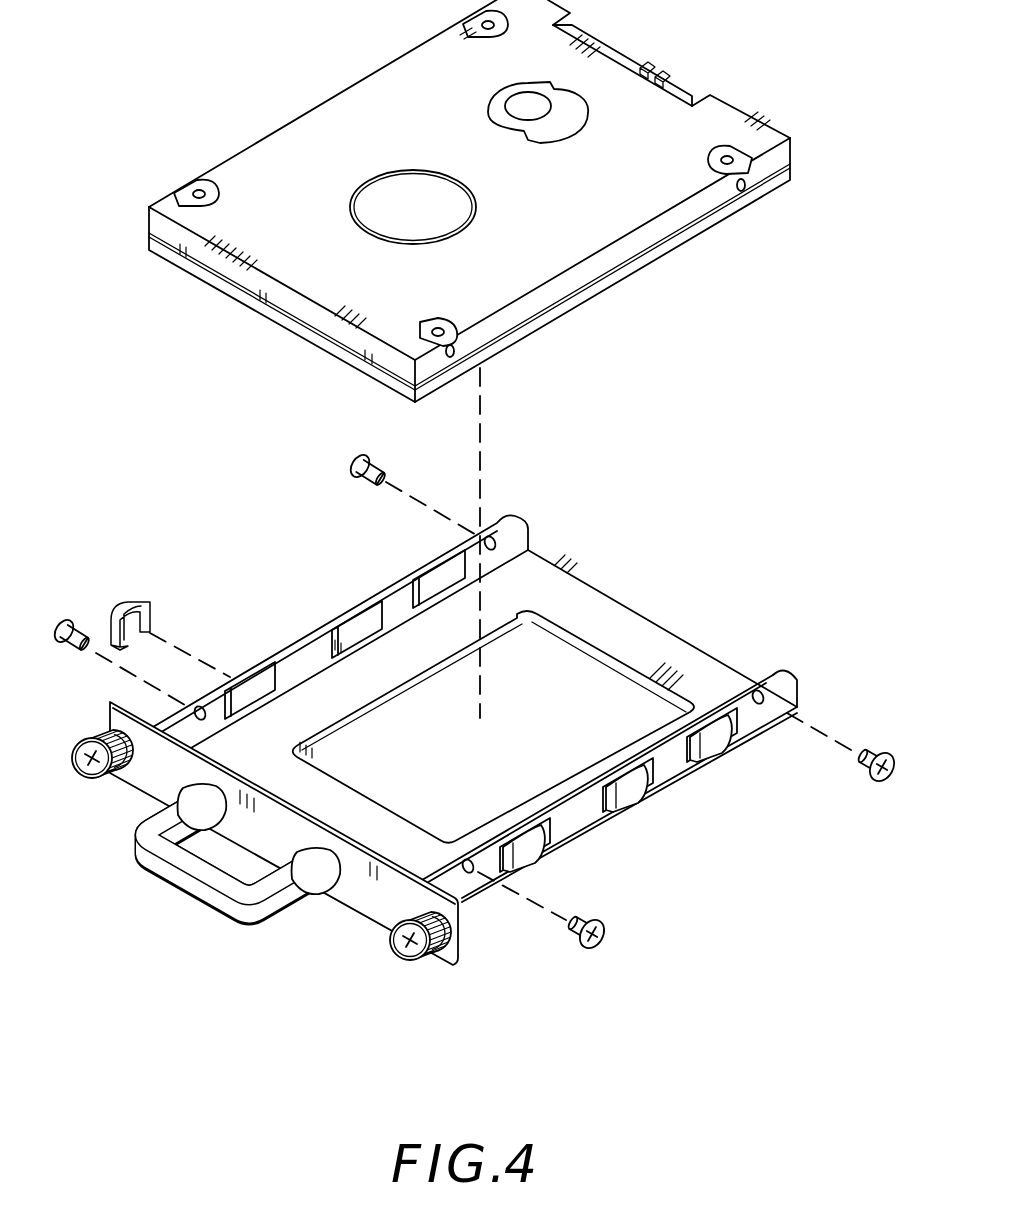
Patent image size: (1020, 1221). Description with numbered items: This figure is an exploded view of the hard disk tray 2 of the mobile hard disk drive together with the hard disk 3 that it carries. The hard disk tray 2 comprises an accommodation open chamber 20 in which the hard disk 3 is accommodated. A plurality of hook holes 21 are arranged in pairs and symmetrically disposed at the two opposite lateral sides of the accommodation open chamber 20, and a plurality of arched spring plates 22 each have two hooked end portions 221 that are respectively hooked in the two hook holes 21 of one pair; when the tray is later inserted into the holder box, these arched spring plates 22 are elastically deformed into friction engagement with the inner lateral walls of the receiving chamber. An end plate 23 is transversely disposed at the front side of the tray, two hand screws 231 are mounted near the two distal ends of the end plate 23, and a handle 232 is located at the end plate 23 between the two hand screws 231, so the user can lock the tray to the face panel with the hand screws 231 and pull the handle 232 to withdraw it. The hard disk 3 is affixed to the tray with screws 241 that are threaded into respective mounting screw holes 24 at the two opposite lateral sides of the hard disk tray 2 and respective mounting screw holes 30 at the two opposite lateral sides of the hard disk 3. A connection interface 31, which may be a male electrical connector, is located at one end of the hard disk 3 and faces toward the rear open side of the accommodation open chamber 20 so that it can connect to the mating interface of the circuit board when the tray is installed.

The hard disk tray 2 is at (469, 709).
The accommodation open chamber 20 is at (502, 708).
The hook holes 21 is at (740, 728).
The arched spring plates 22 is at (714, 750).
The hooked end portions 221 is at (152, 612).
The end plate 23 is at (372, 908).
The hand screws 231 is at (82, 744).
The handle 232 is at (172, 886).
The mounting screw holes 24 is at (768, 698).
The screws 241 is at (598, 920).
The hard disk 3 is at (474, 201).
The mounting screw holes 30 is at (745, 189).
The connection interface 31 is at (590, 52).